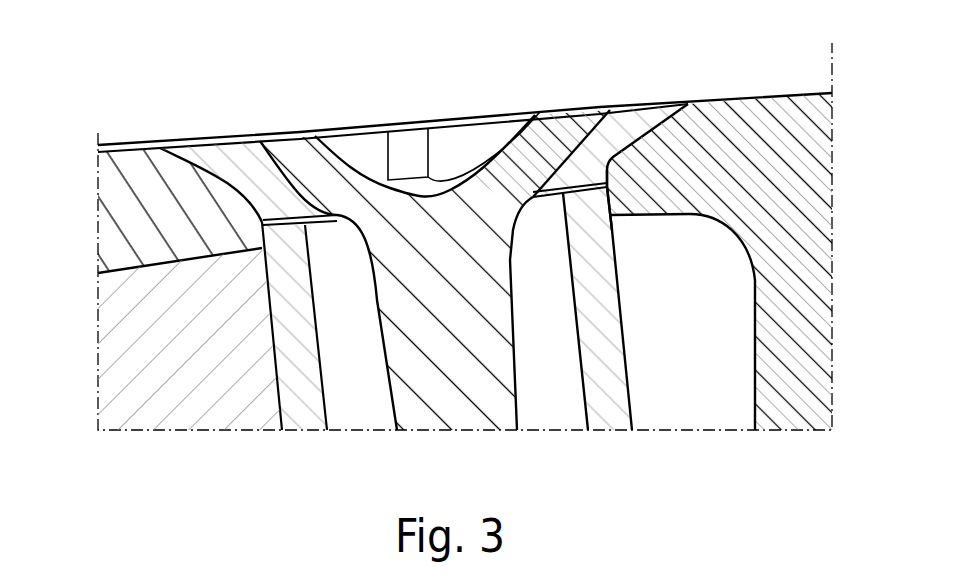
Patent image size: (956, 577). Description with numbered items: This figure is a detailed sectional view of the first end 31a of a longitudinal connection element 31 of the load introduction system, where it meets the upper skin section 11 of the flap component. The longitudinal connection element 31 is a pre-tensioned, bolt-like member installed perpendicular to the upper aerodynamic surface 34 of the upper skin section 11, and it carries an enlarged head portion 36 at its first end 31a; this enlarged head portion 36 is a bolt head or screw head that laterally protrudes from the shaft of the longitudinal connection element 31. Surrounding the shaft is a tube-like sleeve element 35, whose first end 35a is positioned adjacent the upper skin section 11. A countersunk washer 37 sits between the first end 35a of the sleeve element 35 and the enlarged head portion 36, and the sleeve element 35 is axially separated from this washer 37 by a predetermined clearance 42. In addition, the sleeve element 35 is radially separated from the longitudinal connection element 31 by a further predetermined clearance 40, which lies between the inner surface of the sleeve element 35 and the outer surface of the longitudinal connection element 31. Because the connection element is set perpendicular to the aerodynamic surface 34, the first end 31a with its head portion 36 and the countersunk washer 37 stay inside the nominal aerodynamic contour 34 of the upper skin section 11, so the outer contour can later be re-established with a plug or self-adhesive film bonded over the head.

The upper skin section 11 is at (126, 176).
The washer 37 is at (228, 177).
The first end of the sleeve element 35a is at (250, 273).
The first end of the longitudinal connection element 31a is at (334, 292).
The longitudinal connection element 31 is at (453, 370).
The enlarged head portion 36 is at (568, 133).
The sleeve element 35 is at (615, 423).
The upper aerodynamic surface 34 is at (743, 90).
The predetermined clearance 42 is at (608, 187).
The predetermined clearance 40 is at (341, 330).